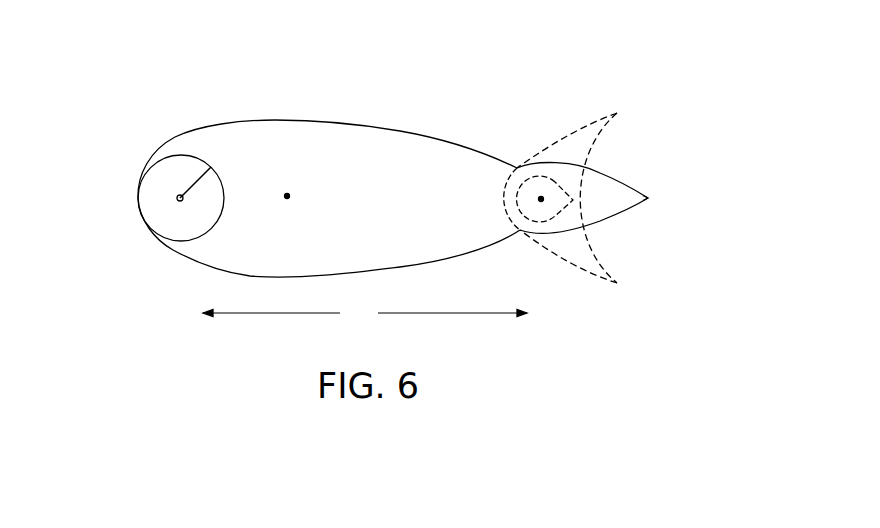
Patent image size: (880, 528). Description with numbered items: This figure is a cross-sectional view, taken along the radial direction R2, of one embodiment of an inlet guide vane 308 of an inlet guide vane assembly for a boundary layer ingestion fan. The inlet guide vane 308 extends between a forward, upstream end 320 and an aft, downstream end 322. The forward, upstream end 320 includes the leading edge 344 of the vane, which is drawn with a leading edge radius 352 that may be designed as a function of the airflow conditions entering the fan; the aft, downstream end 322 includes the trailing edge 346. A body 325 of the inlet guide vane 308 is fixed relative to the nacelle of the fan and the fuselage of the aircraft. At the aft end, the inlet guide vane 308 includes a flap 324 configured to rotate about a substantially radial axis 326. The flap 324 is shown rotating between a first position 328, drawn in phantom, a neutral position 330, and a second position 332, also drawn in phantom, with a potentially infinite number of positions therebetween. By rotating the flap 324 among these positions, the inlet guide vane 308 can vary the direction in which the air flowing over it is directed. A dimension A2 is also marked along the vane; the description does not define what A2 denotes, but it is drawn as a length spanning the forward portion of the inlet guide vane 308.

The inlet guide vane 308 is at (363, 105).
The forward, upstream end 320 is at (118, 143).
The aft, downstream end 322 is at (717, 165).
The flap 324 is at (620, 195).
The body 325 is at (270, 120).
The substantially radial axis 326 is at (542, 190).
The first position 328 is at (622, 108).
The neutral position 330 is at (670, 220).
The second position 332 is at (618, 285).
The leading edge 344 is at (139, 197).
The trailing edge 346 is at (652, 198).
The leading edge radius 352 is at (193, 177).
The radial direction R2 is at (287, 197).
The chord distance A2 is at (365, 318).